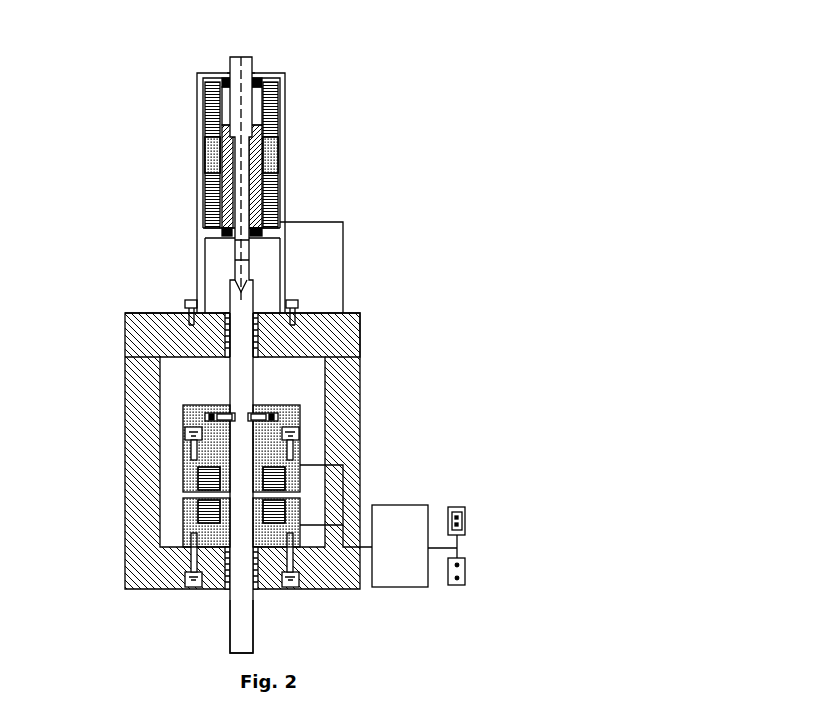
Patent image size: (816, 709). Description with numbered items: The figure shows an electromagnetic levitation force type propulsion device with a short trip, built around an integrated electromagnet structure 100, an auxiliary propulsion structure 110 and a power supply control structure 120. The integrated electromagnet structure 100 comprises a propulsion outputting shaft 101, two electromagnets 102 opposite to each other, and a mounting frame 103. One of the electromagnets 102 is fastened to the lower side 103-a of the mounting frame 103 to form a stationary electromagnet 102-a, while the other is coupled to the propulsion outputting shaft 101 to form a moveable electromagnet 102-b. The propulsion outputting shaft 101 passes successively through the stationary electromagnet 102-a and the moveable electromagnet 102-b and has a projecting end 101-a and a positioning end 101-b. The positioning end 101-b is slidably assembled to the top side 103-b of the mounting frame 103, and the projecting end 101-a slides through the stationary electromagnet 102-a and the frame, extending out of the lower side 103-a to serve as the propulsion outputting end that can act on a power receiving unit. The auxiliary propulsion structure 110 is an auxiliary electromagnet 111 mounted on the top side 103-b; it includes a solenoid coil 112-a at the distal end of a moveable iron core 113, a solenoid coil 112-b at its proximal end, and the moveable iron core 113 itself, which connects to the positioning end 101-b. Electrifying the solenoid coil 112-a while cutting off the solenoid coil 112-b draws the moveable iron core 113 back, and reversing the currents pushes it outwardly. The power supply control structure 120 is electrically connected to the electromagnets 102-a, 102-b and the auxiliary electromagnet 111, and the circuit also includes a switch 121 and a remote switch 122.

The integrated electromagnet structure 100 is at (150, 587).
The propulsion outputting shaft 101 is at (252, 355).
The projecting end 101-a is at (240, 603).
The positioning end 101-b is at (240, 317).
The electromagnets 102 is at (229, 472).
The stationary electromagnet 102-a is at (184, 500).
The moveable electromagnet 102-b is at (184, 463).
The mounting frame 103 is at (142, 352).
The lower side 103-a is at (188, 547).
The top side 103-b is at (187, 318).
The auxiliary propulsion structure 110 is at (319, 183).
The auxiliary electromagnet 111 is at (286, 150).
The solenoid coil 112-a is at (273, 112).
The solenoid coil 112-b is at (286, 205).
The moveable iron core 113 is at (245, 258).
The power supply control structure 120 is at (372, 505).
The switch 121 is at (457, 507).
The remote switch 122 is at (457, 585).